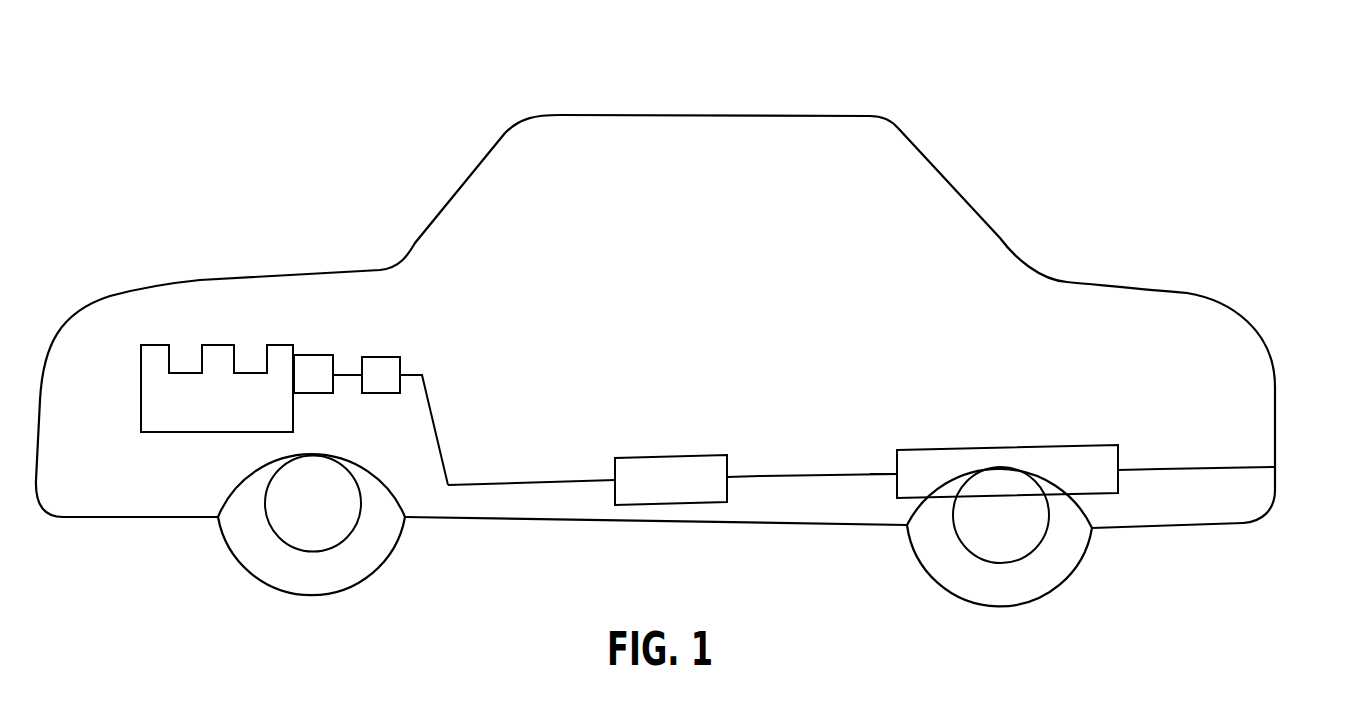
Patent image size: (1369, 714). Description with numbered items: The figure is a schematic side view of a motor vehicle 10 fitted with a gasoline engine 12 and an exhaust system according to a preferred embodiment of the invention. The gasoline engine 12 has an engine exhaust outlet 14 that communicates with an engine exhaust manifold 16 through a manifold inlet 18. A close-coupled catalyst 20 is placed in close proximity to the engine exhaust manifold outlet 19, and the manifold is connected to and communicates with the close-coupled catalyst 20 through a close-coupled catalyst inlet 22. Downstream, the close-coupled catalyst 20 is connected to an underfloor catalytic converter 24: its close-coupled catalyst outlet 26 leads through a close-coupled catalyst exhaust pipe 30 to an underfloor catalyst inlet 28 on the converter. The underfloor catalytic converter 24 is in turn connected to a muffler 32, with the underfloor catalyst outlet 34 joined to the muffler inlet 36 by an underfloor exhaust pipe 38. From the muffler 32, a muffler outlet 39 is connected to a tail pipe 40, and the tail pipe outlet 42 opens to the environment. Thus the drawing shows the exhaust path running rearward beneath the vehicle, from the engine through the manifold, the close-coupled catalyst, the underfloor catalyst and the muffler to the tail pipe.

The motor vehicle 10 is at (692, 85).
The gasoline engine 12 is at (158, 357).
The engine exhaust outlet 14 is at (295, 369).
The engine exhaust manifold 16 is at (315, 355).
The manifold inlet 18 is at (293, 377).
The engine exhaust manifold outlet 19 is at (333, 373).
The close-coupled catalyst 20 is at (387, 367).
The close-coupled catalyst inlet 22 is at (358, 388).
The underfloor catalytic converter 24 is at (670, 507).
The close-coupled catalyst outlet 26 is at (400, 372).
The underfloor catalyst inlet 28 is at (613, 492).
The close-coupled catalyst exhaust pipe 30 is at (523, 483).
The muffler 32 is at (987, 457).
The underfloor catalyst outlet 34 is at (728, 470).
The muffler inlet 36 is at (897, 468).
The underfloor exhaust pipe 38 is at (798, 475).
The muffler outlet 39 is at (1120, 468).
The tail pipe 40 is at (1217, 467).
The tail pipe outlet 42 is at (1275, 467).